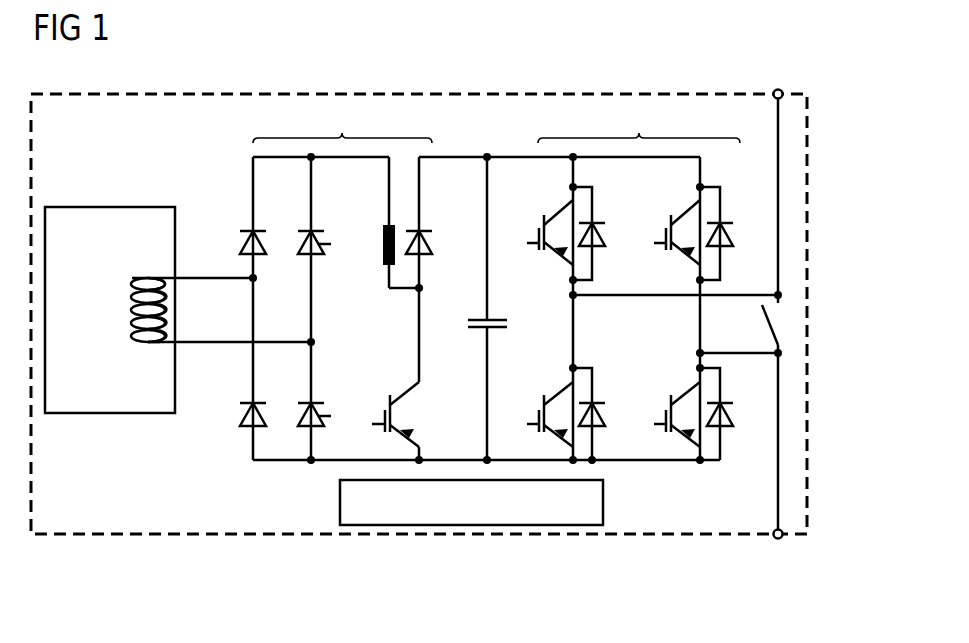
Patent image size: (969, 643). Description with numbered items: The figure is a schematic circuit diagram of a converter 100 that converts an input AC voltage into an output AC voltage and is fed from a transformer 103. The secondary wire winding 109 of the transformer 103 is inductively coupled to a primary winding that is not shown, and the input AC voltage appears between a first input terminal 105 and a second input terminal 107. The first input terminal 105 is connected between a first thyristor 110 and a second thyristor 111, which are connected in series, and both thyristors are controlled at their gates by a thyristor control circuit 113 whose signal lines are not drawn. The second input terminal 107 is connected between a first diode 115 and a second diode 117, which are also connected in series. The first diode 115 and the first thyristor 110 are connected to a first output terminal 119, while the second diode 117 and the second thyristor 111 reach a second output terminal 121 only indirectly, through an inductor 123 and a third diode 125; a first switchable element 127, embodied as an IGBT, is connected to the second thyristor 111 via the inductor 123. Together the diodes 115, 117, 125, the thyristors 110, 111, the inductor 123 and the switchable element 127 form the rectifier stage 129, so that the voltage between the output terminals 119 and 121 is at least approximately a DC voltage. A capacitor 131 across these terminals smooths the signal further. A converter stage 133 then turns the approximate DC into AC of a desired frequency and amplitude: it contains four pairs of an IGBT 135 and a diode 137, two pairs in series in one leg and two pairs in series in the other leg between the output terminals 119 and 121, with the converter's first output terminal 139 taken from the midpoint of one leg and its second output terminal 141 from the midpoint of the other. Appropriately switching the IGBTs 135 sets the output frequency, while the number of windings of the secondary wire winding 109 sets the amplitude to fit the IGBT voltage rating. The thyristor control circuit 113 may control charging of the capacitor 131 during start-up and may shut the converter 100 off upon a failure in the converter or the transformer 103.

The converter 100 is at (680, 70).
The transformer 103 is at (110, 207).
The first input terminal 105 is at (314, 342).
The second input terminal 107 is at (250, 277).
The secondary wire winding 109 is at (128, 320).
The thyristor 110 is at (318, 404).
The second thyristor 111 is at (320, 231).
The thyristor control circuit 113 is at (603, 497).
The first diode 115 is at (247, 430).
The second diode 117 is at (262, 231).
The first output terminal 119 is at (452, 458).
The second output terminal 121 is at (448, 158).
The inductor 123 is at (383, 242).
The third diode 125 is at (428, 231).
The first switchable element 127 is at (372, 422).
The rectifier stage 129 is at (342, 283).
The capacitor 131 is at (498, 320).
The converter stage 133 is at (639, 283).
The IGBT 135 is at (526, 241).
The diode 137 is at (598, 223).
The first output terminal 139 is at (778, 540).
The second output terminal 141 is at (778, 88).